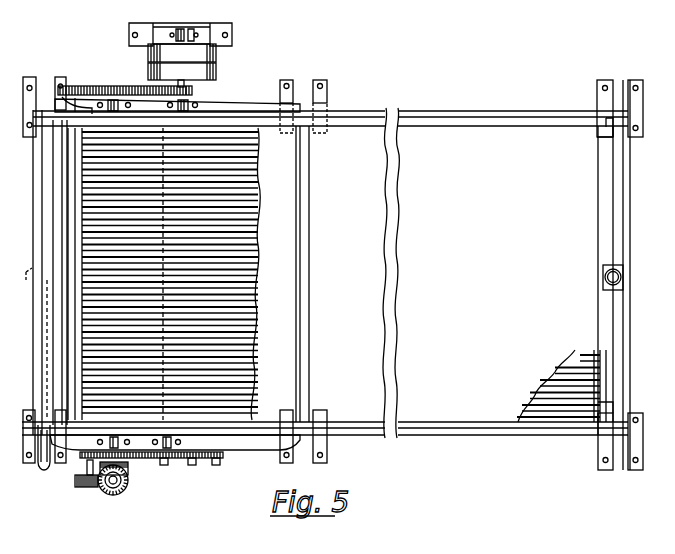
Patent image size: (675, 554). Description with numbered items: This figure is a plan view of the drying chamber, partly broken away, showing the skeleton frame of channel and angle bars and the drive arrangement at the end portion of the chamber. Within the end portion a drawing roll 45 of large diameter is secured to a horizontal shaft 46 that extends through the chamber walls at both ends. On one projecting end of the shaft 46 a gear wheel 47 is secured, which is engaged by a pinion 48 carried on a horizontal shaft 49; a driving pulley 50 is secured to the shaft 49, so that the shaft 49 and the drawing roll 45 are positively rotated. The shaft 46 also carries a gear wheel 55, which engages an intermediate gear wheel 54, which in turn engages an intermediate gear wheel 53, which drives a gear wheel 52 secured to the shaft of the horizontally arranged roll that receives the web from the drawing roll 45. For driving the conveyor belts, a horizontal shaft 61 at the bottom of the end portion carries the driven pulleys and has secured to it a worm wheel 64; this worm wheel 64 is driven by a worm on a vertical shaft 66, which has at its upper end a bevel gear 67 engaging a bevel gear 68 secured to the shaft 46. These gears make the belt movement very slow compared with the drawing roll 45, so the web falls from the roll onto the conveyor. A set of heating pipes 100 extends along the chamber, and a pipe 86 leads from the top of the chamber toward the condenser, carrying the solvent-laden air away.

The drawing roll 45 is at (165, 245).
The horizontal shaft 46 is at (92, 104).
The gear wheel 47 is at (106, 88).
The pinion 48 is at (200, 96).
The horizontal shaft 49 is at (192, 87).
The driving pulley 50 is at (218, 55).
The gear wheel 52 is at (212, 460).
The intermediate gear wheel 53 is at (204, 462).
The intermediate gear wheel 54 is at (180, 460).
The gear wheel 55 is at (80, 458).
The horizontal shaft 61 is at (85, 466).
The worm wheel 64 is at (88, 482).
The vertical shaft 66 is at (110, 493).
The bevel gear 67 is at (116, 496).
The bevel gear 68 is at (126, 473).
The pipe 86 is at (604, 277).
The pipes 100 is at (566, 408).